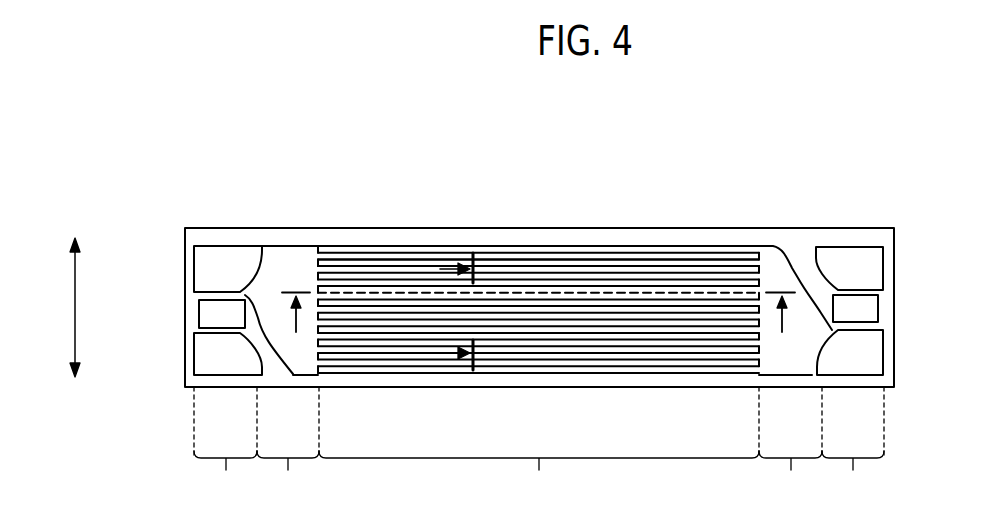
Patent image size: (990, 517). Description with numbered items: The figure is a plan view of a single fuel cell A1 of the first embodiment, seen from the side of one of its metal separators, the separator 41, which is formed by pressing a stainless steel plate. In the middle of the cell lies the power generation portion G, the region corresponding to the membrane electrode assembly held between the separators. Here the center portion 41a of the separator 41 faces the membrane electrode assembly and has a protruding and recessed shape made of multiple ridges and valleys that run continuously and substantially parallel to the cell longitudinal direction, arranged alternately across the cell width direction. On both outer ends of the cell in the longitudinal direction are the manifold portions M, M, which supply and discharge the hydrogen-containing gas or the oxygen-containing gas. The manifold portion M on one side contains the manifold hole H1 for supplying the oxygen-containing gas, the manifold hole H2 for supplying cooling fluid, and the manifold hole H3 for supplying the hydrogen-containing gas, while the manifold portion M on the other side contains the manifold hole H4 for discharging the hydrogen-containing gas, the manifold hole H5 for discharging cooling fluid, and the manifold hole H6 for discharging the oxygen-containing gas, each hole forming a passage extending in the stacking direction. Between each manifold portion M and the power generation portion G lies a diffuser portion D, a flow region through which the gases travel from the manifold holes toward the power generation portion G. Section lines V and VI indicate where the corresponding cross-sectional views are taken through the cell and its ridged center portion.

The separator 41 is at (306, 227).
The center portion of separator 41a is at (510, 268).
The fuel cell A1 is at (673, 228).
The manifold hole H1 is at (205, 270).
The manifold hole H2 is at (210, 314).
The manifold hole H3 is at (205, 355).
The manifold hole H4 is at (868, 270).
The manifold hole H5 is at (870, 310).
The manifold hole H6 is at (868, 353).
The section line V is at (539, 315).
The section line VI is at (442, 268).
The manifold portion M is at (539, 446).
The diffuser portion D is at (539, 446).
The power generation portion G is at (539, 446).